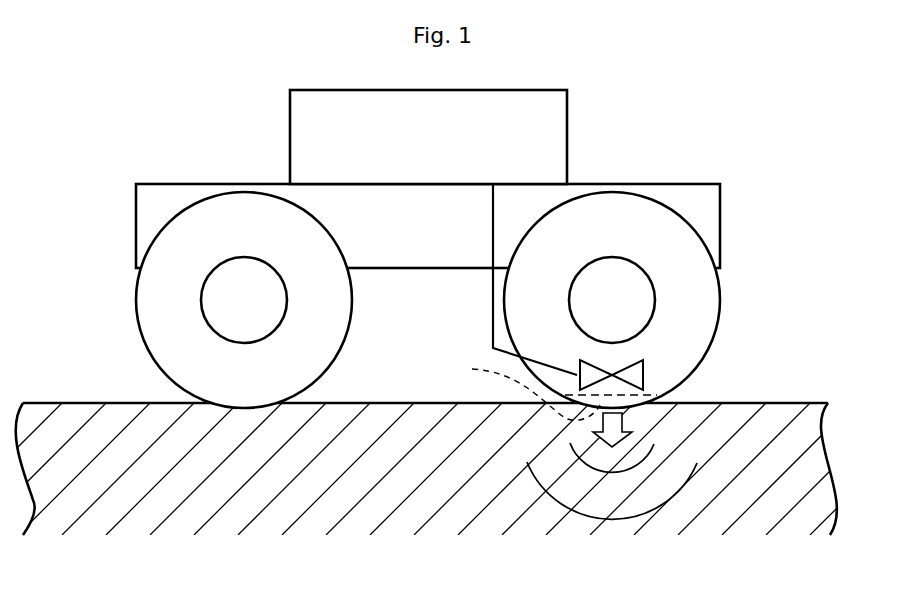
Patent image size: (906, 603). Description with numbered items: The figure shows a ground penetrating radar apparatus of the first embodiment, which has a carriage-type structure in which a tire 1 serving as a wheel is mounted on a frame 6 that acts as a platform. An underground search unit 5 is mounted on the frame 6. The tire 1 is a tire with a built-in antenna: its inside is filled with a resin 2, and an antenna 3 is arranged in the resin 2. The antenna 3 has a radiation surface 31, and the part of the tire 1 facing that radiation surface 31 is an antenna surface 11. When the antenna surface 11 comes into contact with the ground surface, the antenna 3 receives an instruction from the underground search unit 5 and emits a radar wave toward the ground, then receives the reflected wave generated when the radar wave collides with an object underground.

The tire 1 is at (720, 280).
The resin 2 is at (703, 319).
The antenna 3 is at (643, 367).
The underground search unit 5 is at (567, 133).
The frame 6 is at (720, 225).
The antenna surface 11 is at (616, 397).
The radiation surface 31 is at (521, 386).